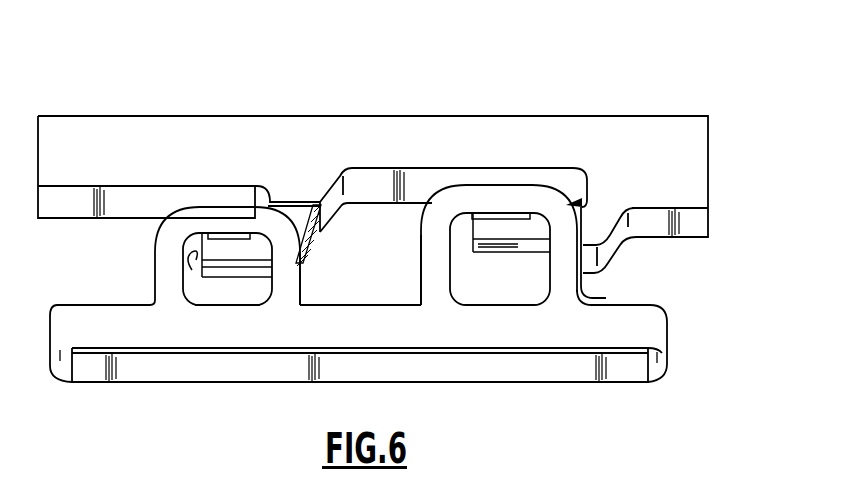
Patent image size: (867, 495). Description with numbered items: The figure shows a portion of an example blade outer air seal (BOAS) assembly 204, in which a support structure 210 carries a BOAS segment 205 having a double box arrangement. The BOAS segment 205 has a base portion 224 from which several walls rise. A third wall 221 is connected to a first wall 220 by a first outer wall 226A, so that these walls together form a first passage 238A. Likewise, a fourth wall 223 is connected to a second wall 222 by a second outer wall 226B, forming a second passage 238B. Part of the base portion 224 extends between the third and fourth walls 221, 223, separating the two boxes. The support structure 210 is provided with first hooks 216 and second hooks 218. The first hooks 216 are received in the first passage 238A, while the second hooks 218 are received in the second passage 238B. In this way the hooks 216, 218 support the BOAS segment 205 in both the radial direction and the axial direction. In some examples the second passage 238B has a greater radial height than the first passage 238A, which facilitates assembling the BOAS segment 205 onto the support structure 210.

The BOAS assembly 204 is at (714, 85).
The support structure 210 is at (368, 135).
The first outer wall 226A is at (203, 222).
The second outer wall 226B is at (517, 198).
The first hooks 216 is at (258, 247).
The second hooks 218 is at (490, 232).
The first wall 220 is at (170, 268).
The second wall 222 is at (562, 283).
The third wall 221 is at (290, 278).
The fourth wall 223 is at (435, 279).
The BOAS segment 205 is at (660, 323).
The base portion 224 is at (548, 333).
The first passage 238A is at (223, 288).
The second passage 238B is at (535, 288).